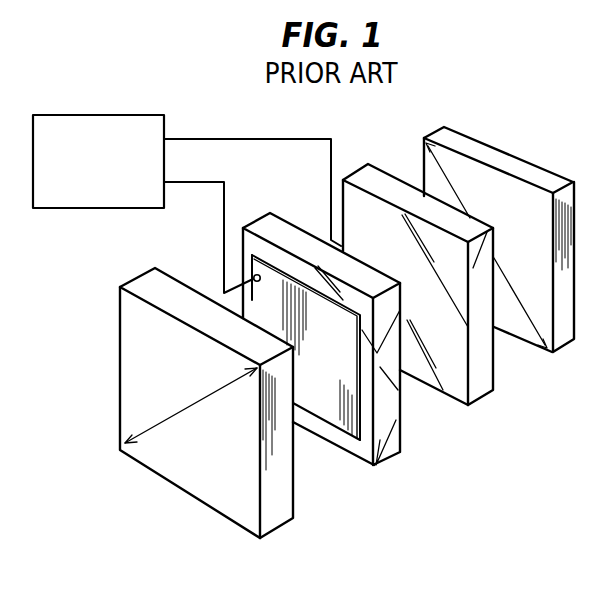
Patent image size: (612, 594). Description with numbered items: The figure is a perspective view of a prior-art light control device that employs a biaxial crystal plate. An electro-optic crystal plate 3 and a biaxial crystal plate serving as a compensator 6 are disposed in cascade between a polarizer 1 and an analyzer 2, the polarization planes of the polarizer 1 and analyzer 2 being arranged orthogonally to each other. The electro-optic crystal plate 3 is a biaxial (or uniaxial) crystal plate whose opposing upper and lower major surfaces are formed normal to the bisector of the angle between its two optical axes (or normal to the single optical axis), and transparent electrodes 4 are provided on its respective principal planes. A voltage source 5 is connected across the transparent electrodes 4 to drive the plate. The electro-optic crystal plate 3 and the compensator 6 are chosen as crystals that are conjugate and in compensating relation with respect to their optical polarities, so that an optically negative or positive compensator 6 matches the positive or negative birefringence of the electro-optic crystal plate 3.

The polarizer 1 is at (275, 517).
The analyzer 2 is at (563, 336).
The electro-optic crystal plate 3 is at (383, 455).
The transparent electrodes 4 is at (344, 436).
The voltage source 5 is at (133, 90).
The compensator 6 is at (478, 386).